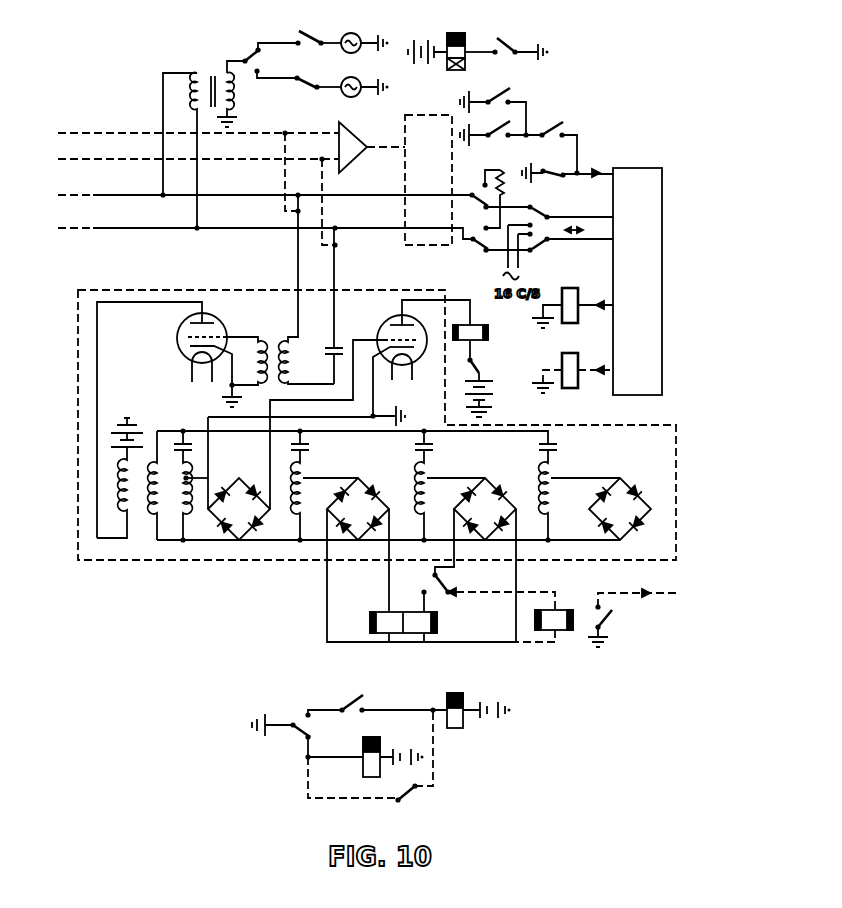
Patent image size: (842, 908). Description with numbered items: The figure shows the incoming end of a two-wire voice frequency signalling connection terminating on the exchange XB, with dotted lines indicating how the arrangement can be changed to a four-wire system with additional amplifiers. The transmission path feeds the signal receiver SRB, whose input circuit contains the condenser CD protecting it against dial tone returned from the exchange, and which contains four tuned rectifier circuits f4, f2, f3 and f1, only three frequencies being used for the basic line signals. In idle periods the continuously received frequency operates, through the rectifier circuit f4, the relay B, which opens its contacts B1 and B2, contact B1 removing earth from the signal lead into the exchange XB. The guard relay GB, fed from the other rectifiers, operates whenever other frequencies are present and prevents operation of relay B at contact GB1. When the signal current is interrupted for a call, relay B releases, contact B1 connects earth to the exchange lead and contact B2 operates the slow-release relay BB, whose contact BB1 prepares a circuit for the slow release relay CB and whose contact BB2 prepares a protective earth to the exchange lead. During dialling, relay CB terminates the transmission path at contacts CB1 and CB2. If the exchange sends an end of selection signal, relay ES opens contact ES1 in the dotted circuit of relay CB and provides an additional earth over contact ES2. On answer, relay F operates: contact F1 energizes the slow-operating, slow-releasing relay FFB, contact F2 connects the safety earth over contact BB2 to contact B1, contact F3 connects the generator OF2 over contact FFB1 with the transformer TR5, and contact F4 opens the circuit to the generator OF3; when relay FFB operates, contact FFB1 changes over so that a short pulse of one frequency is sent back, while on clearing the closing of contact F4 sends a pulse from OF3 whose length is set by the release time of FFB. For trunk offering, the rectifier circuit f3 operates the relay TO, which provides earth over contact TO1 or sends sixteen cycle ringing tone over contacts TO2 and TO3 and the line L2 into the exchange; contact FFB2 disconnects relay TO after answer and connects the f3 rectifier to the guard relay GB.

The transformer TR5 is at (204, 141).
The contact of relay FFB FFB1 is at (271, 60).
The contact of relay F F3 is at (299, 38).
The generator OF2 is at (360, 34).
The contact of relay F F4 is at (299, 89).
The generator OF3 is at (359, 97).
The slow-operating, slow-releasing relay FFB is at (451, 43).
The contact of relay F F1 is at (520, 44).
The contact of relay ES ES2 is at (500, 109).
The contact of relay F F2 is at (501, 138).
The contact of relay BB BB2 is at (566, 145).
The contact of relay B B1 is at (567, 169).
The contact of relay CB CB1 is at (491, 200).
The contact of relay CB CB2 is at (491, 250).
The contact of relay TO TO2 is at (570, 212).
The contact of relay TO TO3 is at (570, 247).
The line L2 is at (585, 232).
The exchange XB is at (637, 281).
The relay F is at (572, 299).
The relay ES is at (572, 365).
The relay B is at (470, 334).
The contact of guard relay GB GB1 is at (488, 387).
The signal receiver SRB is at (149, 297).
The condenser CD is at (326, 306).
The tuned rectifier circuit for frequency f4 is at (239, 509).
The rectifier circuit for frequency f2 is at (358, 509).
The rectifier circuit for frequency f3 is at (485, 509).
The rectifier circuit for frequency f1 is at (620, 509).
The contact of relay FFB FFB2 is at (459, 583).
The guard relay GB is at (417, 615).
The relay TO is at (512, 615).
The contact of relay TO TO1 is at (632, 618).
The contact of relay B B2 is at (297, 721).
The contact of relay BB BB1 is at (393, 703).
The slow release relay CB is at (477, 702).
The slow-release relay BB is at (364, 749).
The contact of relay ES ES1 is at (376, 760).